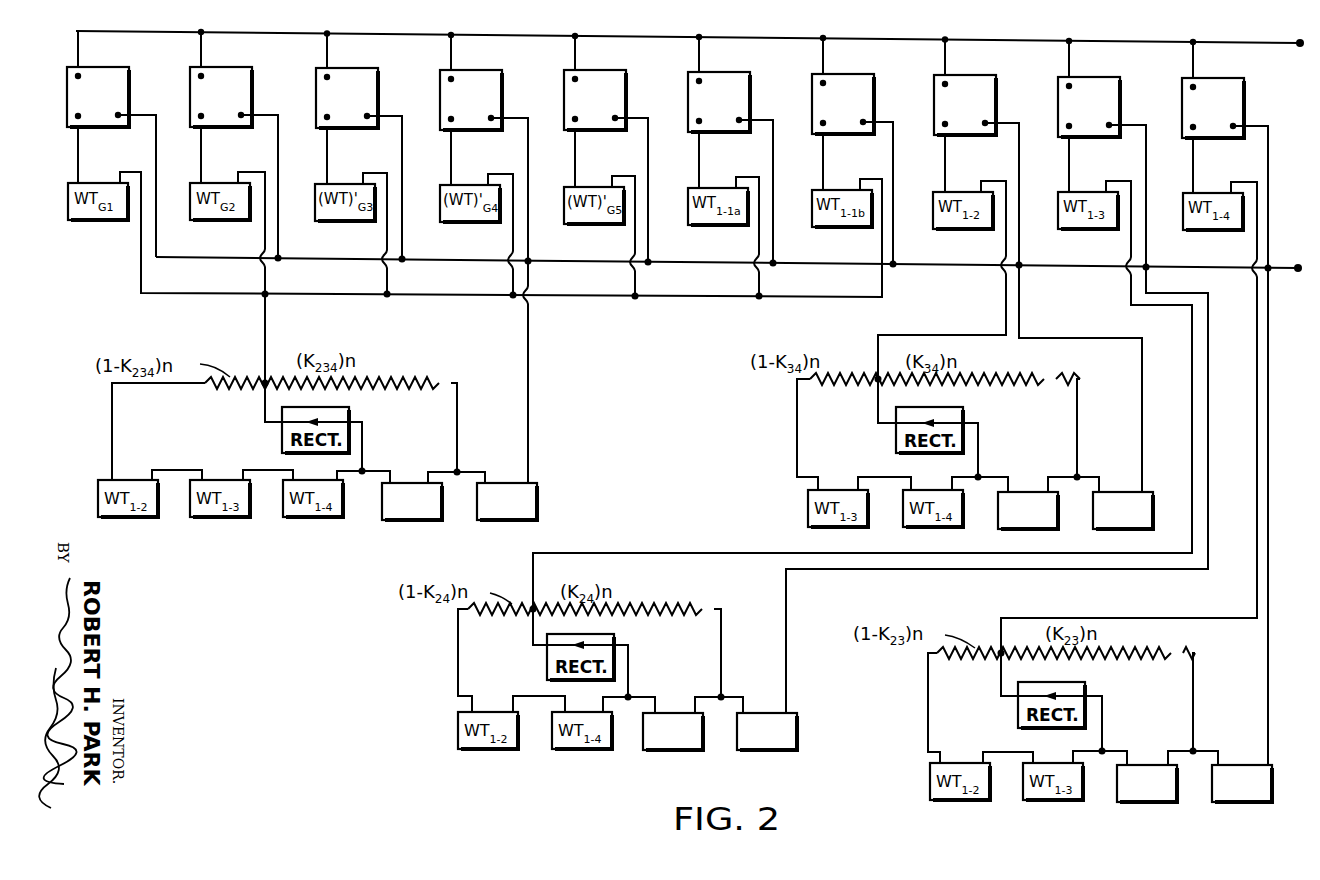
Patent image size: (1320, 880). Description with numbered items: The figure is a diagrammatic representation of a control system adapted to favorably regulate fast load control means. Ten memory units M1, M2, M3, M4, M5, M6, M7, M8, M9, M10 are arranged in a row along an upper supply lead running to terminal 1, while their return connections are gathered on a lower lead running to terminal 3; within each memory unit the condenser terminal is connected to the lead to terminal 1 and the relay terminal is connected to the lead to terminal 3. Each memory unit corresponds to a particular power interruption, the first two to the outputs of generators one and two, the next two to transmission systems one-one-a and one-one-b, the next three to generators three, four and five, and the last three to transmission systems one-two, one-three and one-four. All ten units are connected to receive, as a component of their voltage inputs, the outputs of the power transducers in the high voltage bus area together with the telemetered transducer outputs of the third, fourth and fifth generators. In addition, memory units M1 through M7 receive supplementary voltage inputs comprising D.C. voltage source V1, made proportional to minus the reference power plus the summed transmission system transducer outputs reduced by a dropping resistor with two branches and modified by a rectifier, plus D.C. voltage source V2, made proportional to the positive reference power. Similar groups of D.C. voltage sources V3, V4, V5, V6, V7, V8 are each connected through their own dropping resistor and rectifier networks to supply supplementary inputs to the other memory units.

The terminal 1 is at (691, 32).
The terminal 3 is at (729, 279).
The memory unit M1 is at (98, 97).
The memory unit M2 is at (221, 97).
The memory unit M3 is at (347, 98).
The memory unit M4 is at (471, 100).
The memory unit M5 is at (595, 100).
The memory unit M6 is at (719, 102).
The memory unit M7 is at (843, 104).
The memory unit M8 is at (965, 105).
The memory unit M9 is at (1089, 107).
The memory unit M10 is at (1213, 108).
The D.C. voltage source V1 is at (412, 501).
The D.C. voltage source V2 is at (507, 501).
The D.C. voltage source V3 is at (1028, 510).
The D.C. voltage source V4 is at (1123, 510).
The D.C. voltage source V5 is at (673, 731).
The D.C. voltage source V6 is at (767, 731).
The D.C. voltage source V7 is at (1147, 783).
The D.C. voltage source V8 is at (1242, 783).